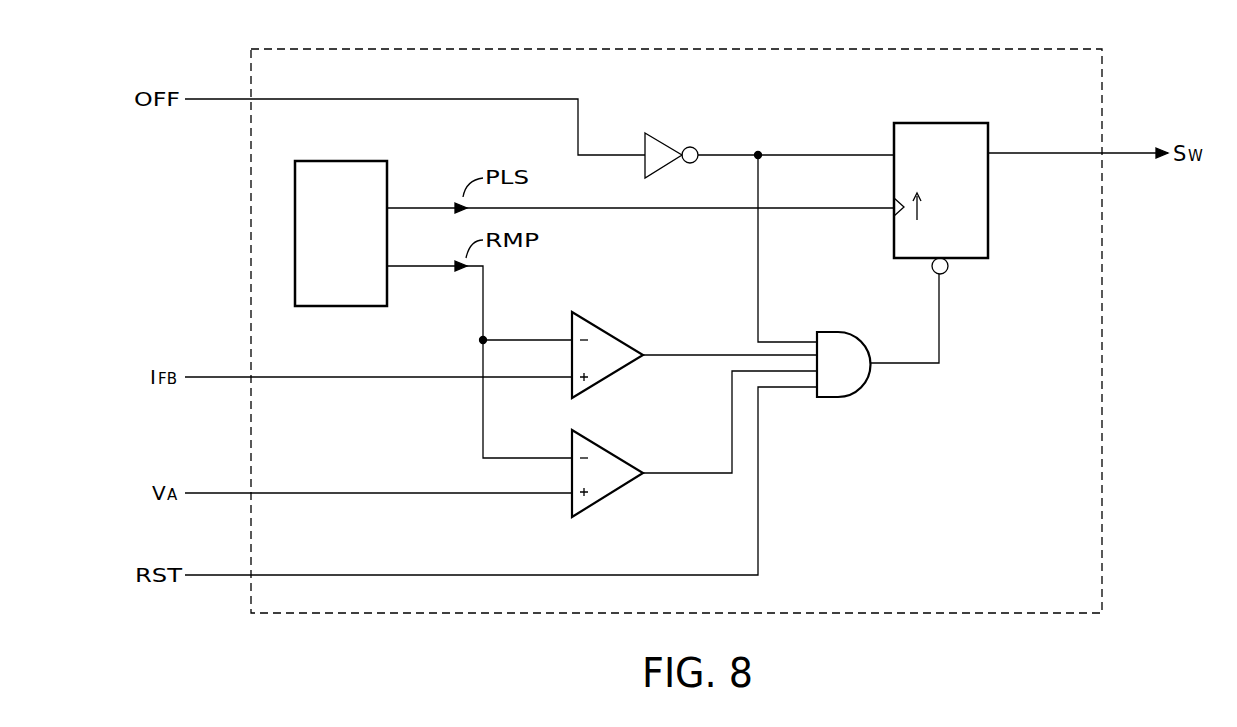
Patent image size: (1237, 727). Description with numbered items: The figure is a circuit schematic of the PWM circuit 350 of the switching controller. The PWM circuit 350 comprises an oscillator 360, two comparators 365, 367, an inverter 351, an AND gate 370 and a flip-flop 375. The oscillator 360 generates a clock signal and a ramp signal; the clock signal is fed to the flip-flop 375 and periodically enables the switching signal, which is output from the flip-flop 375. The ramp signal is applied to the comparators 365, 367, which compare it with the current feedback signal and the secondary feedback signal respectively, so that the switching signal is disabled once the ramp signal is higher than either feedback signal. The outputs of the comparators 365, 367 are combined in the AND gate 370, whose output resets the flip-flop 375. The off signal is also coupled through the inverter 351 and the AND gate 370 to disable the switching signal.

The PWM circuit 350 is at (1055, 49).
The inverter 351 is at (667, 140).
The oscillator 360 is at (332, 160).
The comparator 365 is at (601, 325).
The comparator 367 is at (601, 443).
The AND gate 370 is at (838, 398).
The flip-flop 375 is at (990, 243).